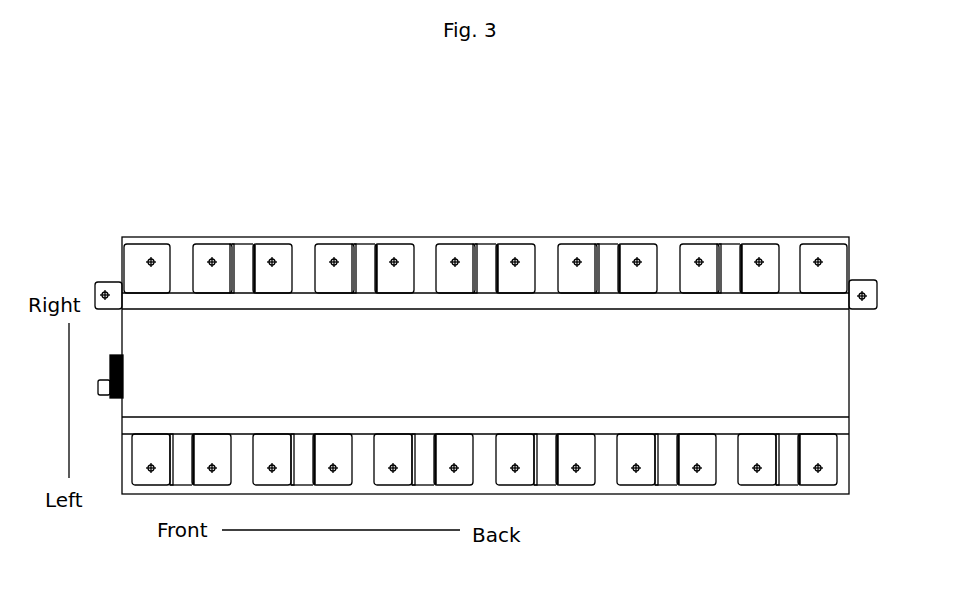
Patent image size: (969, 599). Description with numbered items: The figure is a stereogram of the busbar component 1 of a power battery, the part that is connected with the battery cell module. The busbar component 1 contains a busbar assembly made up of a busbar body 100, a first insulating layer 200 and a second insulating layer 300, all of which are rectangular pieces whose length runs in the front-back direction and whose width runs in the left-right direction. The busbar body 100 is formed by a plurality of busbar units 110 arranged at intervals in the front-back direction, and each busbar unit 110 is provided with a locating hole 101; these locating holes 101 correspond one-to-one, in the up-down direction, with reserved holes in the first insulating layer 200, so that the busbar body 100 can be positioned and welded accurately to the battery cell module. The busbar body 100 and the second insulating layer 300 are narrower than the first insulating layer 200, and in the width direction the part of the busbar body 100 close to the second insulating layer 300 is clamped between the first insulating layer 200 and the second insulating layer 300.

The busbar component 1 is at (509, 327).
The busbar body 100 is at (485, 228).
The busbar unit 110 is at (373, 243).
The locating hole 101 is at (582, 243).
The first insulating layer 200 is at (605, 478).
The second insulating layer 300 is at (793, 347).